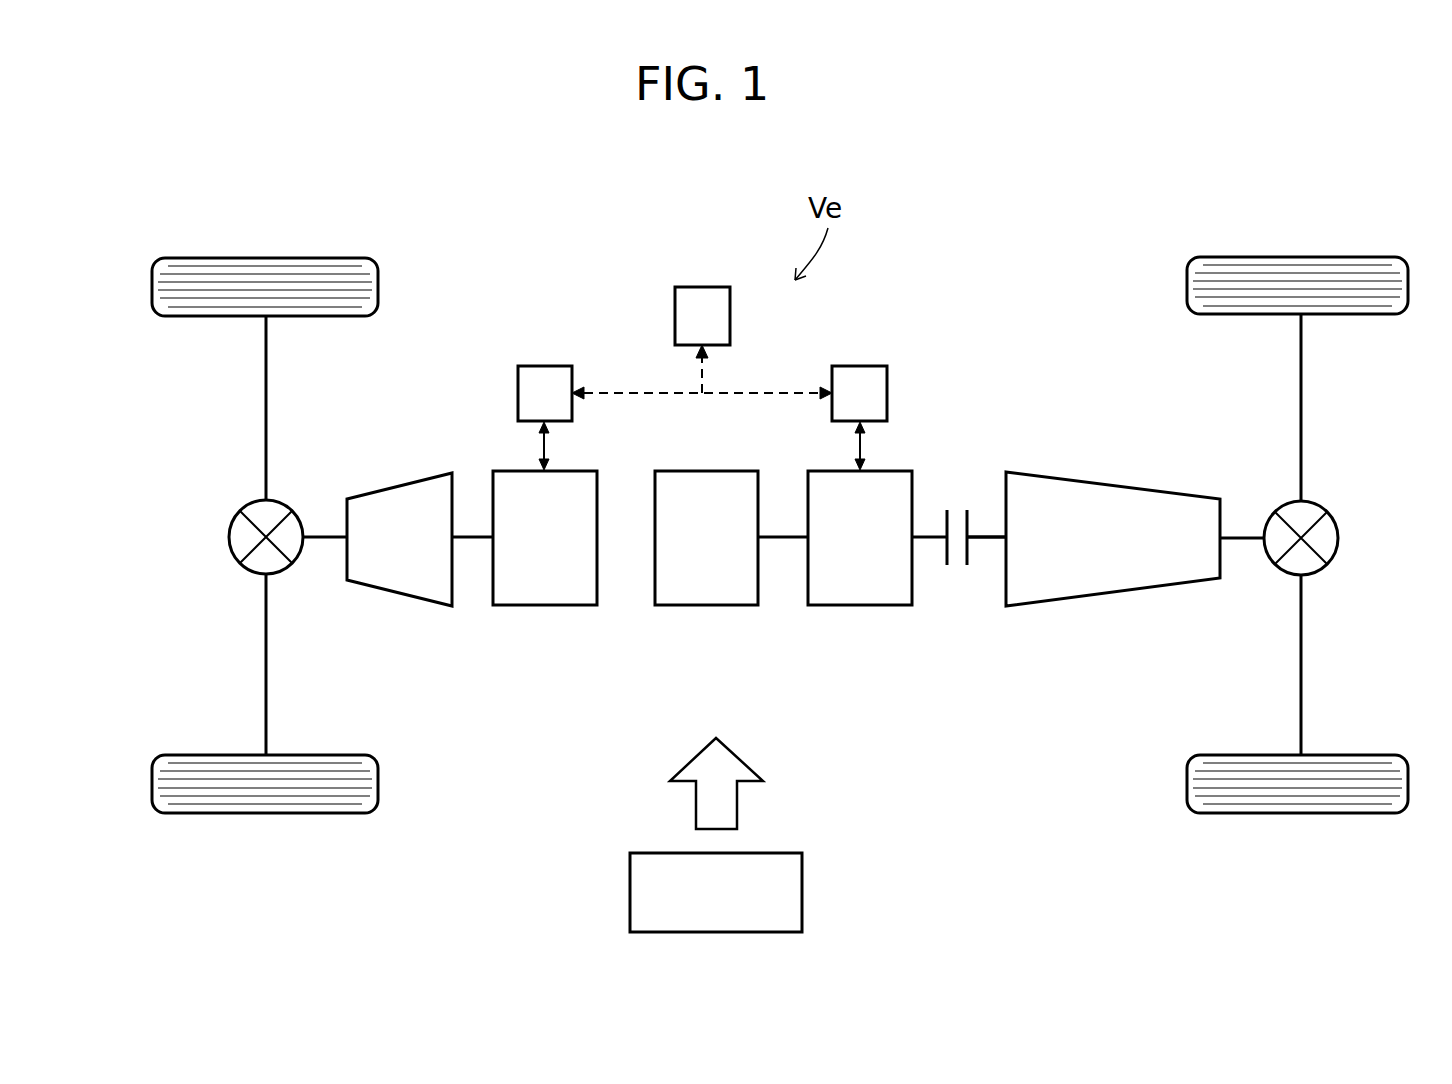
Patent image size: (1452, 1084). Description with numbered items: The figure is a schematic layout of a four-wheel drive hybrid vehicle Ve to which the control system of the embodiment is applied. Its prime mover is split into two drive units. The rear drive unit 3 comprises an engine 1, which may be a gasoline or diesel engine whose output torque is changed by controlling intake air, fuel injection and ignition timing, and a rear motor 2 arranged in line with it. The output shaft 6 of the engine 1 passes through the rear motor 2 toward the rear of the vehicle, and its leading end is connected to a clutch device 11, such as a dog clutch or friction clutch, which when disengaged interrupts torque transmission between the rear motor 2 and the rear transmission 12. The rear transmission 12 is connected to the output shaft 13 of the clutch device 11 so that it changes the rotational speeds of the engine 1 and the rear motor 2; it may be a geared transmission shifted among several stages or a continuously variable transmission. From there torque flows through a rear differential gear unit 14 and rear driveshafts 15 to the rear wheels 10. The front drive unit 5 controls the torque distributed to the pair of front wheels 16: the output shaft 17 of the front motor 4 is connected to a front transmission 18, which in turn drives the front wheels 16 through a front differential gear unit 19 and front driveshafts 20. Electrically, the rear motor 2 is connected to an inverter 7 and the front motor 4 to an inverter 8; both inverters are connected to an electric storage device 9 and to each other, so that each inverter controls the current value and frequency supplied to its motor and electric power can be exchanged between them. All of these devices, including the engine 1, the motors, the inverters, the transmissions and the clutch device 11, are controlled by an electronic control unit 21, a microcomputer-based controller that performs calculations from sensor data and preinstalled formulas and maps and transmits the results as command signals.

The engine 1 is at (704, 606).
The rear motor 2 is at (856, 606).
The rear drive unit 3 is at (974, 392).
The front motor 4 is at (540, 606).
The front drive unit 5 is at (484, 368).
The output shaft 6 is at (783, 533).
The inverter 7 is at (859, 366).
The inverter 8 is at (541, 366).
The electric storage device 9 is at (706, 287).
The rear wheels 10 is at (1301, 257).
The clutch device 11 is at (953, 588).
The rear transmission 12 is at (1088, 596).
The output shaft 13 is at (988, 535).
The rear differential gear unit 14 is at (1340, 536).
The rear driveshafts 15 is at (1302, 400).
The front wheels 16 is at (267, 257).
The output shaft 17 is at (474, 535).
The front transmission 18 is at (396, 595).
The front differential gear unit 19 is at (229, 535).
The front driveshafts 20 is at (264, 403).
The electronic control unit 21 is at (802, 893).